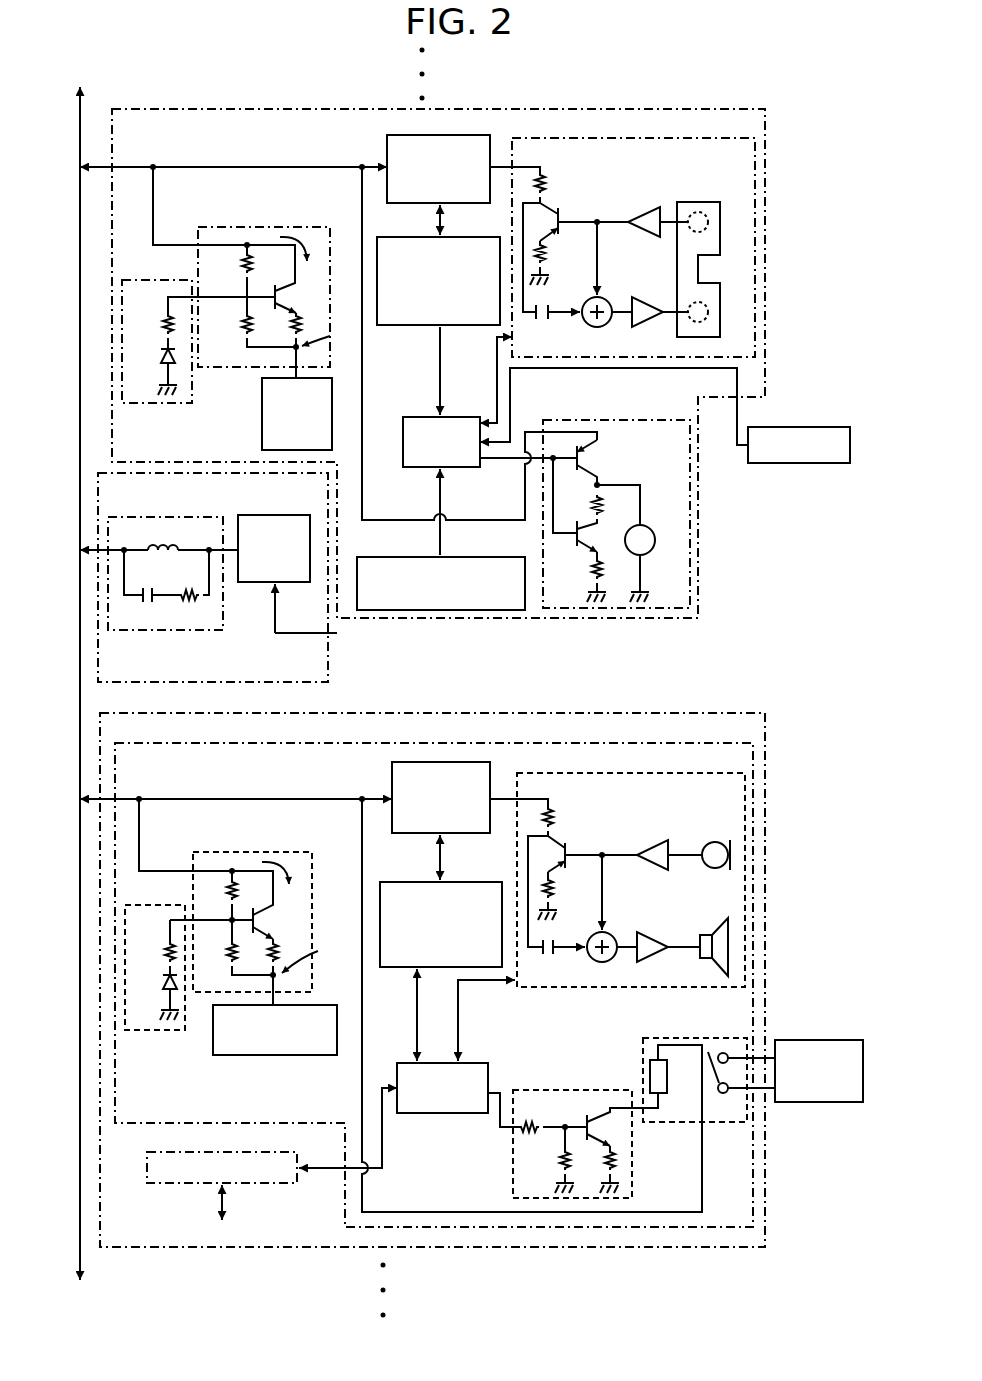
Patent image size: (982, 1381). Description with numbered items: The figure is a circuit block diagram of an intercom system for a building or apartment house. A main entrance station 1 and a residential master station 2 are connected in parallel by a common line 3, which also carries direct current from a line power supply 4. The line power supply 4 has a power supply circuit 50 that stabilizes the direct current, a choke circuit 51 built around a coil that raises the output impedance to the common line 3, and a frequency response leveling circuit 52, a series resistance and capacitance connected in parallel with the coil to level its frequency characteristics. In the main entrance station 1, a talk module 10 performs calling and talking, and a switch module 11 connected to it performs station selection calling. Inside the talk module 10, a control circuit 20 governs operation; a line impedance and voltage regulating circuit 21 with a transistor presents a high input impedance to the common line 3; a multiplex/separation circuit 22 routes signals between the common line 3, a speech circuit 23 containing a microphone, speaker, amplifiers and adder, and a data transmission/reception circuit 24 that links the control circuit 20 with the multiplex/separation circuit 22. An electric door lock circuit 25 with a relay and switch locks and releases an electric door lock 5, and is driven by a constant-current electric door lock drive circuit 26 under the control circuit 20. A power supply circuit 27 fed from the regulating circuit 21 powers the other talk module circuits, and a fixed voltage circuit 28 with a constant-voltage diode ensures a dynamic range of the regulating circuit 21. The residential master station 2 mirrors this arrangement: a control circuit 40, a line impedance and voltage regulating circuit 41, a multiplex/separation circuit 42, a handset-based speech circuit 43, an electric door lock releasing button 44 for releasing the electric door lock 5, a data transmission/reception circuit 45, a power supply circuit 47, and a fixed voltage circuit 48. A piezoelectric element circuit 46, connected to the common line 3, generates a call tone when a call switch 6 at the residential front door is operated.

The main entrance station 1 is at (568, 708).
The residential master station 2 is at (566, 108).
The common line 3 is at (80, 697).
The line power supply 4 is at (282, 685).
The electric door lock 5 is at (822, 1040).
The call switch 6 is at (808, 427).
The talk module 10 is at (561, 738).
The switch module 11 is at (289, 1148).
The control circuit 20 is at (400, 1063).
The line impedance and voltage regulating circuit 21 is at (193, 862).
The multiplex/separation circuit 22 is at (392, 772).
The speech circuit 23 is at (583, 770).
The data transmission/reception circuit 24 is at (484, 882).
The electric door lock circuit 25 is at (702, 1038).
The constant-current electric door lock drive circuit 26 is at (603, 1090).
The power supply circuit 27 is at (320, 1056).
The fixed voltage circuit 28 is at (140, 1032).
The control circuit 40 is at (449, 417).
The line impedance and voltage regulating circuit 41 is at (198, 233).
The multiplex/separation circuit 42 is at (418, 135).
The speech circuit 43 is at (573, 136).
The electric door lock releasing button 44 is at (470, 557).
The data transmission/reception circuit 45 is at (466, 237).
The piezoelectric element circuit 46 is at (534, 417).
The power supply circuit 47 is at (262, 408).
The fixed voltage circuit 48 is at (150, 405).
The power supply circuit 50 is at (256, 583).
The choke circuit 51 is at (130, 515).
The frequency response leveling circuit 52 is at (112, 654).